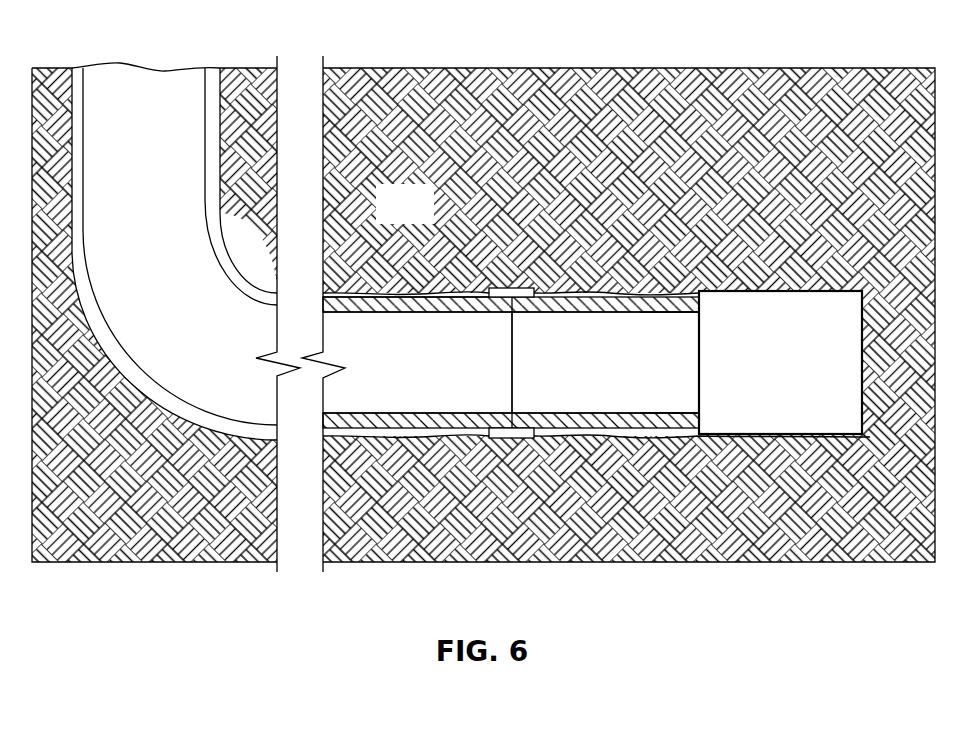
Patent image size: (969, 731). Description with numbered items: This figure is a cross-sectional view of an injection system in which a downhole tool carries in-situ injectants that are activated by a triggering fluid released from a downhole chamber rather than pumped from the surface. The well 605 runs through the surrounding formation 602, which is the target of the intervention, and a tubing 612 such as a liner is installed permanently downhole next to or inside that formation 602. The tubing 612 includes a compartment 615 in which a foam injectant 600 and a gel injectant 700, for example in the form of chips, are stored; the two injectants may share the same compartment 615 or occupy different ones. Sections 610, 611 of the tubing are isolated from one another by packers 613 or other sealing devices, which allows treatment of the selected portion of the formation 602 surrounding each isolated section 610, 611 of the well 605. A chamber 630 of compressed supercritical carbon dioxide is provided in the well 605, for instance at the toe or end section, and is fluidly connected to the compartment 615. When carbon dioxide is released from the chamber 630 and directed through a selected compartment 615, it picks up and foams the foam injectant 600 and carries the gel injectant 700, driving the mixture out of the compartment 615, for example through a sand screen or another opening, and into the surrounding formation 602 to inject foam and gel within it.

The well 605 is at (141, 44).
The formation 602 is at (383, 218).
The gel injectant 700 is at (359, 297).
The packers 613 is at (510, 288).
The compartment 615 is at (572, 293).
The foam injectant 600 is at (620, 302).
The tubing 612 is at (680, 312).
The section of tubing 610 is at (424, 378).
The section of tubing 611 is at (624, 378).
The chamber 630 is at (798, 378).